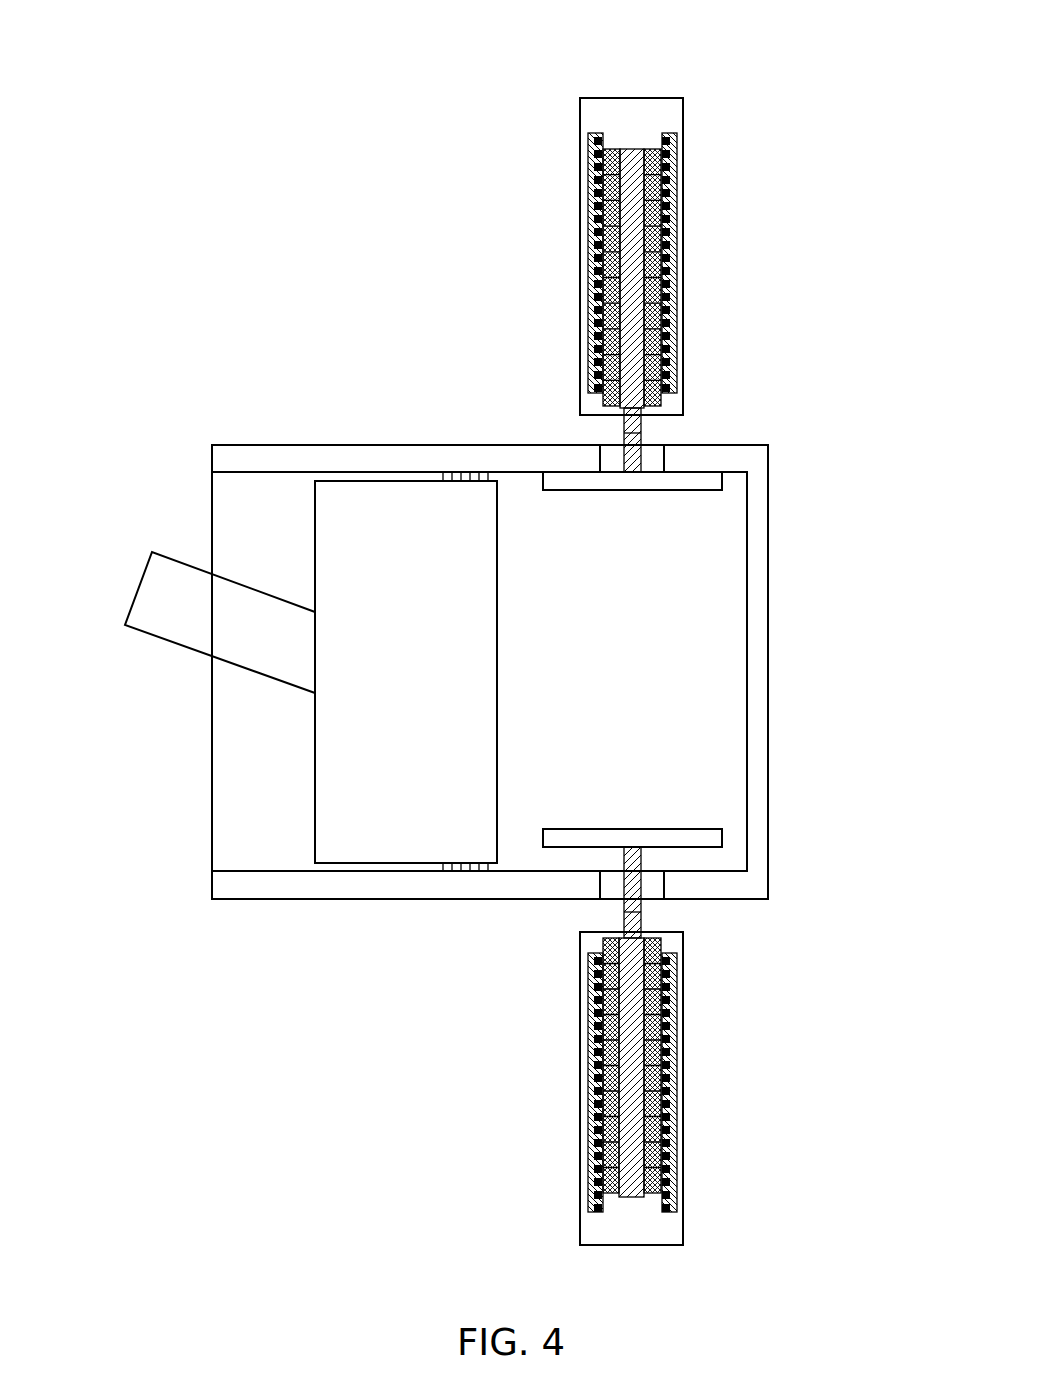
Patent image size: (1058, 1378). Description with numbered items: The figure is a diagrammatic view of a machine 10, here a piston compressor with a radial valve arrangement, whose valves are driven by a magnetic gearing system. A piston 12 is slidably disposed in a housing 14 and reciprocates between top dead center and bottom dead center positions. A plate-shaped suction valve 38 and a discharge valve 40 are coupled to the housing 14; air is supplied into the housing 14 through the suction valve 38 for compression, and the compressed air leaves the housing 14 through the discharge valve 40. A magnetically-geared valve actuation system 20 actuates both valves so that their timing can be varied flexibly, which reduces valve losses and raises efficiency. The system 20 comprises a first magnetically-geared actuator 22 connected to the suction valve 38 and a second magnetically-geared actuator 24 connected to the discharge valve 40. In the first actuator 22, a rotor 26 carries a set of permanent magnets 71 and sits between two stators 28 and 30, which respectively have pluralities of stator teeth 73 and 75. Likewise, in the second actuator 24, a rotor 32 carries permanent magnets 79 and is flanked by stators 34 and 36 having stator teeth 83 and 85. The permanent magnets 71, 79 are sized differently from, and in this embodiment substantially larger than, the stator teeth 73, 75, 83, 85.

The machine 10 is at (183, 72).
The piston 12 is at (494, 655).
The housing 14 is at (302, 452).
The magnetically-geared valve actuation system 20 is at (713, 38).
The first magnetically-geared actuator 22 is at (619, 261).
The second magnetically-geared actuator 24 is at (619, 1071).
The rotor 26 is at (632, 148).
The stator 28 is at (596, 132).
The stator 30 is at (669, 132).
The rotor 32 is at (632, 1198).
The stator 34 is at (596, 1213).
The stator 36 is at (669, 1213).
The suction valve 38 is at (676, 484).
The discharge valve 40 is at (600, 838).
The permanent magnets 71 is at (660, 149).
The stator teeth 73 is at (603, 305).
The stator teeth 75 is at (662, 290).
The permanent magnets 79 is at (664, 1150).
The stator teeth 83 is at (603, 1098).
The stator teeth 85 is at (662, 1088).